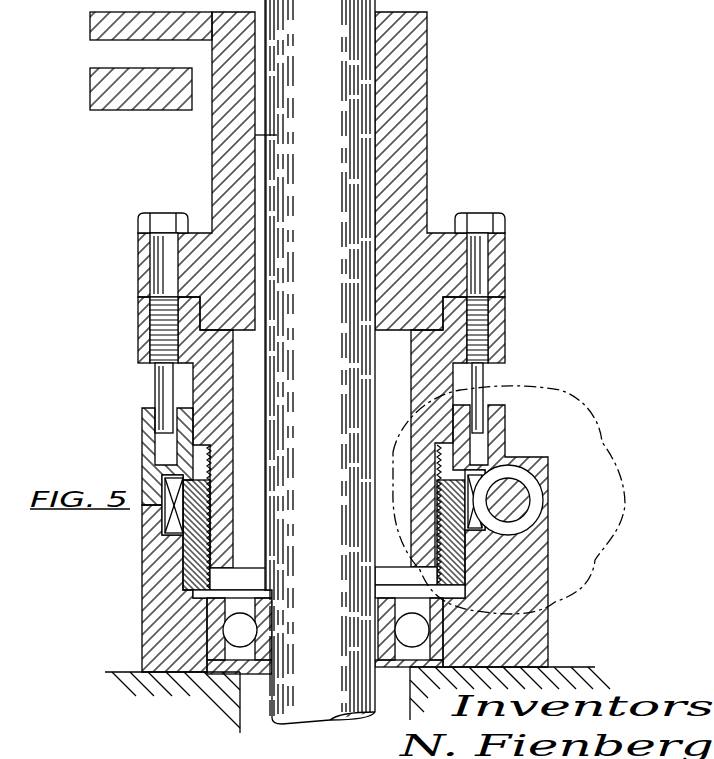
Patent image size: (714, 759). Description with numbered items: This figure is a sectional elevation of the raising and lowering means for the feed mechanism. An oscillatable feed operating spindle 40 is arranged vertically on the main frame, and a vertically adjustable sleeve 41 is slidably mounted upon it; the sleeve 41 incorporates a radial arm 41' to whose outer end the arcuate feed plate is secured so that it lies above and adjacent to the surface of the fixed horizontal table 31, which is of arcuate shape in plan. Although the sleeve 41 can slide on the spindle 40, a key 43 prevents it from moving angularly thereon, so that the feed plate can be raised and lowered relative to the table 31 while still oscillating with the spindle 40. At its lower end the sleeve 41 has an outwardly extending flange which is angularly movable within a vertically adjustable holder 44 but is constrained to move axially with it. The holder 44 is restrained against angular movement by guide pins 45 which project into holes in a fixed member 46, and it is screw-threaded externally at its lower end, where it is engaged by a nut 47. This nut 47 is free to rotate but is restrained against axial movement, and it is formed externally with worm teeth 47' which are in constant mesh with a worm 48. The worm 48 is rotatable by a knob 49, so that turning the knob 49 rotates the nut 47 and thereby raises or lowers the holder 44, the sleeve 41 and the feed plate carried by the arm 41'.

The fixed horizontal table 31 is at (92, 88).
The feed operating spindle 40 is at (320, 362).
The vertically adjustable sleeve 41 is at (321, 171).
The radial arm 41' is at (131, 27).
The key 43 is at (258, 94).
The vertically adjustable holder 44 is at (228, 429).
The guide pins 45 is at (163, 389).
The fixed member 46 is at (150, 451).
The nut 47 is at (324, 517).
The worm teeth 47' is at (323, 502).
The worm 48 is at (529, 497).
The knob 49 is at (560, 392).